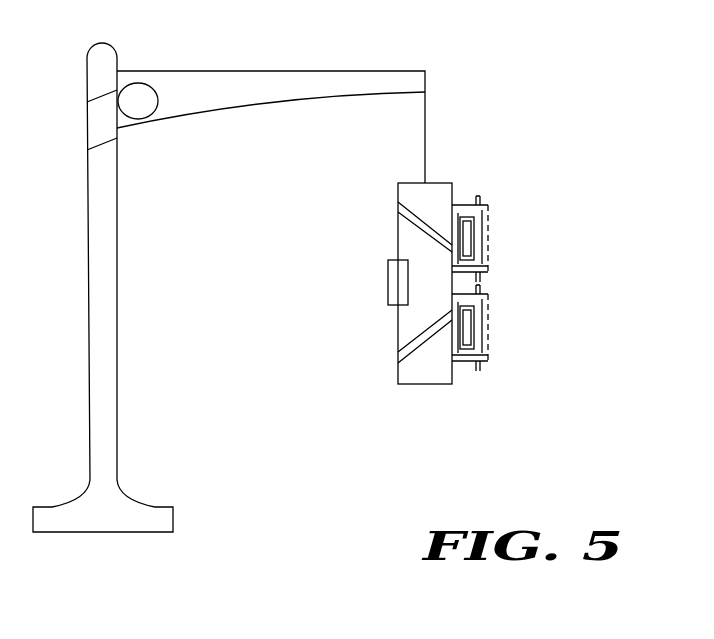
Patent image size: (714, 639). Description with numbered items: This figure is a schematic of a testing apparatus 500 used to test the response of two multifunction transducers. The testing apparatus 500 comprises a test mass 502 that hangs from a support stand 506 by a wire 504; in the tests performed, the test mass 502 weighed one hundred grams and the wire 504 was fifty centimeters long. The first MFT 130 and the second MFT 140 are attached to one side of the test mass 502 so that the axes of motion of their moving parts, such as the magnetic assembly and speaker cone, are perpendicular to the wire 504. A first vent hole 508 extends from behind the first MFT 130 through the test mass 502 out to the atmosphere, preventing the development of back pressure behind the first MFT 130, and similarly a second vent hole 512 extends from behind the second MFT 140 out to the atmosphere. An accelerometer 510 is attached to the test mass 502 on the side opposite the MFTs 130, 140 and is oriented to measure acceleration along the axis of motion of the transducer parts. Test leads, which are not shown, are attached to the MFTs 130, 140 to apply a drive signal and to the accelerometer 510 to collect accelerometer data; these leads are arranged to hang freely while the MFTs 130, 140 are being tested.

The testing apparatus 500 is at (585, 35).
The test mass 502 is at (423, 385).
The wire 504 is at (426, 100).
The support stand 506 is at (282, 71).
The first vent hole 508 is at (398, 360).
The accelerometer 510 is at (388, 291).
The second vent hole 512 is at (398, 208).
The first MFT 130 is at (488, 322).
The second MFT 140 is at (488, 232).